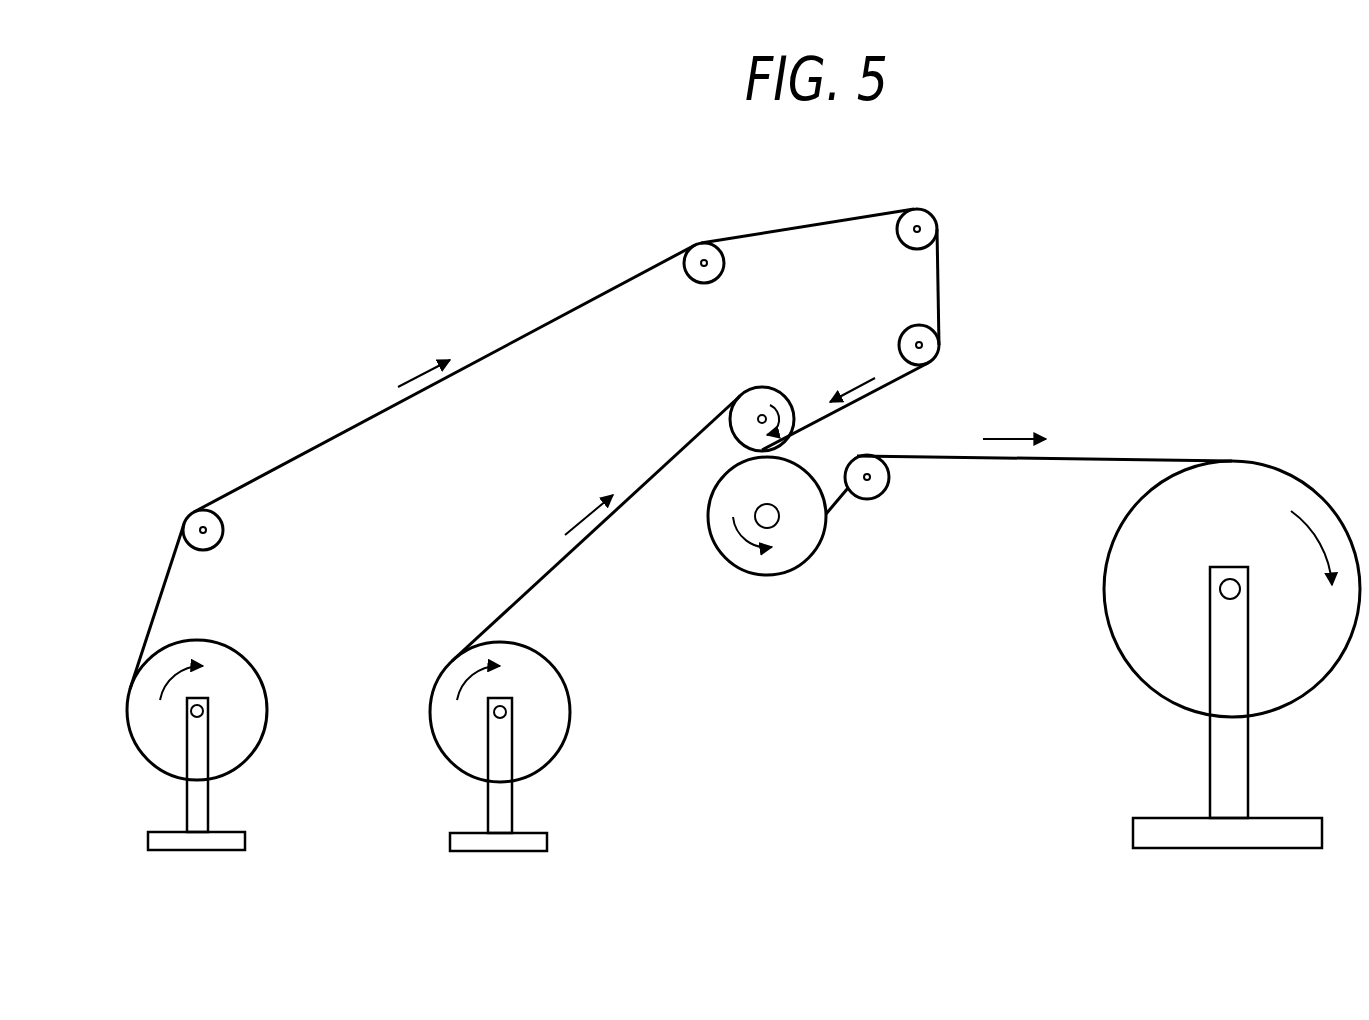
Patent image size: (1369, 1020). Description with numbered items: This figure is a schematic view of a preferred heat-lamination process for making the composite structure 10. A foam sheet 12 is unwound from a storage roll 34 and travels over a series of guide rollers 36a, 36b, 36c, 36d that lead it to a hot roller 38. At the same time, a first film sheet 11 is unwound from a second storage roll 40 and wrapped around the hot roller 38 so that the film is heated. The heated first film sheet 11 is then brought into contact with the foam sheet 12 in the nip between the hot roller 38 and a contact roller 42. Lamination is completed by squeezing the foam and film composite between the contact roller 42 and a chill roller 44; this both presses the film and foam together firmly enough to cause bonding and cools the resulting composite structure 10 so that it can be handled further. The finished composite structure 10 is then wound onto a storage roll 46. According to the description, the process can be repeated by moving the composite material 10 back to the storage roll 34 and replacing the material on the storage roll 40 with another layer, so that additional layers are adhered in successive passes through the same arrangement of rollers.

The composite structure 10 is at (1097, 445).
The first film sheet 11 is at (665, 465).
The foam sheet 12 is at (336, 432).
The storage roll 34 is at (222, 663).
The guide roller 36a is at (218, 540).
The guide roller 36b is at (704, 278).
The guide roller 36c is at (900, 245).
The guide roller 36d is at (930, 360).
The hot roller 38 is at (760, 388).
The storage roll 40 is at (535, 742).
The contact roller 42 is at (773, 560).
The chill roller 44 is at (870, 480).
The storage roll 46 is at (1133, 577).